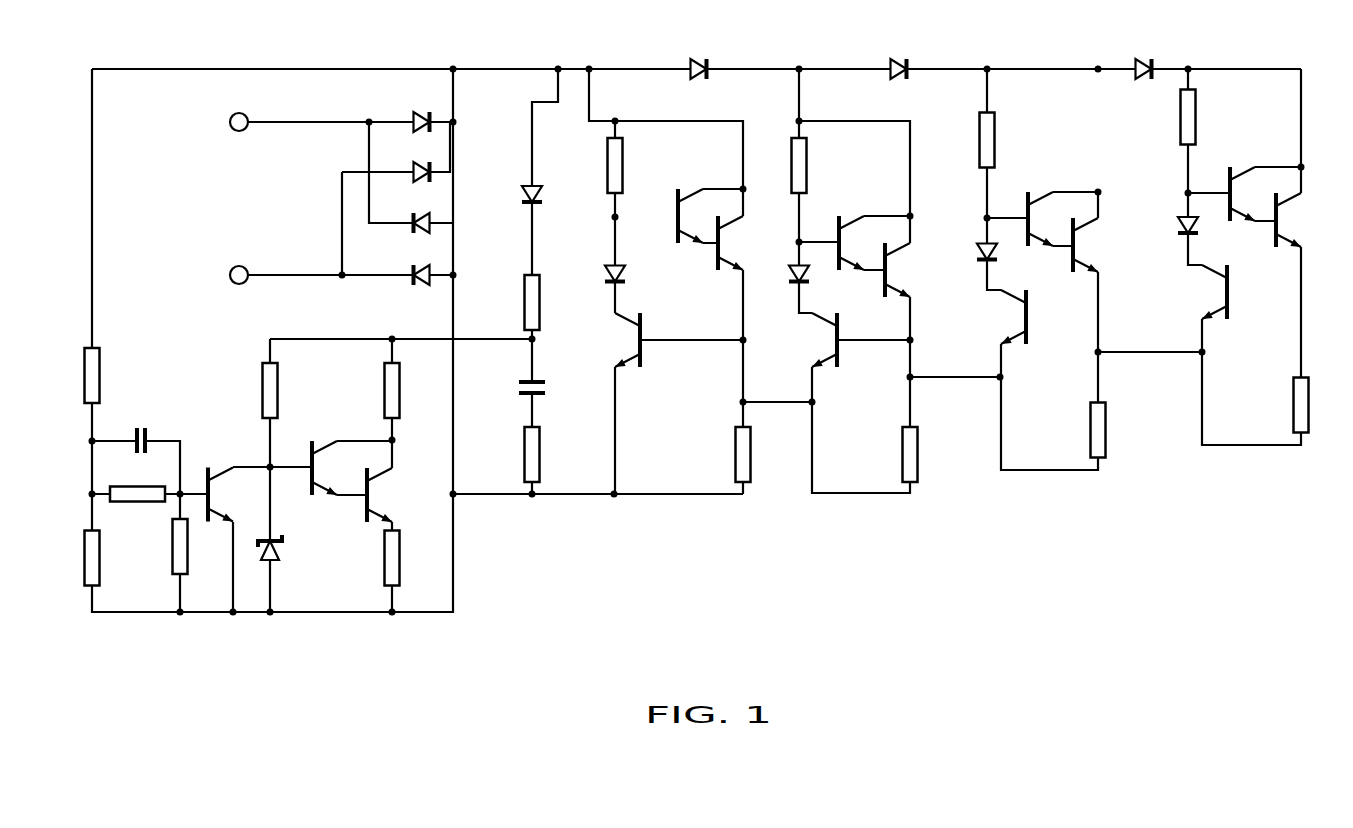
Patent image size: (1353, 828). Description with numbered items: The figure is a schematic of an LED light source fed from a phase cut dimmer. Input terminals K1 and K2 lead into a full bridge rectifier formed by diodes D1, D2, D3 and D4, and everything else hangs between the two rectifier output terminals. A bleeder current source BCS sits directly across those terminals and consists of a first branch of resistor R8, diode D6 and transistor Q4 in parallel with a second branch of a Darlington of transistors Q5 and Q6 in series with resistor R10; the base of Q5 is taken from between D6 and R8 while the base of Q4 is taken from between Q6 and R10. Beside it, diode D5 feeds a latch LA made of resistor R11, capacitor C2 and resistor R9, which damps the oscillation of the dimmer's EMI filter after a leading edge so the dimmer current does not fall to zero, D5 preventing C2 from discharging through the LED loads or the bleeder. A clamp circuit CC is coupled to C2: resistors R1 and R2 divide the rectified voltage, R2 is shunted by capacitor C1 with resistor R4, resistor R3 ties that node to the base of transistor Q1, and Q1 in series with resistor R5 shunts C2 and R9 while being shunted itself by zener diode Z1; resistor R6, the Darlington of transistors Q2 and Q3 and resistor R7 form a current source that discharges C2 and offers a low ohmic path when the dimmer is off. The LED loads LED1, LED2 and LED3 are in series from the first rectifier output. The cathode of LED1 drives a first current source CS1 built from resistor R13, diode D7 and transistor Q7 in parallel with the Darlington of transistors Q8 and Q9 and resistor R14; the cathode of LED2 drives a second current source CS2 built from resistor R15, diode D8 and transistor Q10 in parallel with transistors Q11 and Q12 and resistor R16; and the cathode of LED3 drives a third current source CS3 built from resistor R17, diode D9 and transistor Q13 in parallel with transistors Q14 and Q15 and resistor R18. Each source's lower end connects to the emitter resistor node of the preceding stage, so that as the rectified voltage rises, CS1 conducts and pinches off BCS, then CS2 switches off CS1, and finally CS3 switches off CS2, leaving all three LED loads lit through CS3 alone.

The first input terminal K1 is at (224, 129).
The second input terminal K2 is at (224, 282).
The rectifier diode D1 is at (406, 109).
The rectifier diode D2 is at (406, 159).
The rectifier diode D3 is at (406, 210).
The rectifier diode D4 is at (406, 262).
The diode D5 is at (549, 194).
The diode D6 is at (632, 271).
The diode D7 is at (787, 290).
The diode D8 is at (975, 268).
The diode D9 is at (1177, 242).
The resistor R1 is at (109, 375).
The resistor R2 is at (109, 558).
The resistor R3 is at (137, 510).
The resistor R4 is at (198, 546).
The resistor R5 is at (287, 390).
The resistor R6 is at (409, 390).
The resistor R7 is at (409, 558).
The resistor R8 is at (632, 165).
The resistor R9 is at (548, 454).
The resistor R10 is at (764, 454).
The resistor R11 is at (552, 302).
The resistor R13 is at (820, 165).
The resistor R14 is at (931, 454).
The resistor R15 is at (1008, 140).
The resistor R16 is at (1119, 430).
The resistor R17 is at (1208, 117).
The resistor R18 is at (1278, 405).
The capacitor C1 is at (151, 427).
The capacitor C2 is at (548, 391).
The zener diode Z1 is at (281, 563).
The transistor Q1 is at (232, 495).
The transistor Q2 is at (335, 468).
The transistor Q3 is at (389, 495).
The transistor Q4 is at (616, 340).
The transistor Q5 is at (688, 202).
The transistor Q6 is at (739, 243).
The transistor Q7 is at (816, 340).
The transistor Q8 is at (852, 229).
The transistor Q9 is at (908, 270).
The transistor Q10 is at (998, 317).
The transistor Q11 is at (1036, 206).
The transistor Q12 is at (1098, 245).
The transistor Q13 is at (1198, 292).
The transistor Q14 is at (1234, 179).
The transistor Q15 is at (1301, 220).
The LED load LED1 is at (709, 55).
The LED load LED2 is at (907, 55).
The LED load LED3 is at (1149, 55).
The clamp circuit CC is at (255, 632).
The latch LA is at (524, 523).
The bleeder current source BCS is at (687, 523).
The first current source CS1 is at (861, 525).
The second current source CS2 is at (1049, 494).
The third current source CS3 is at (1252, 468).